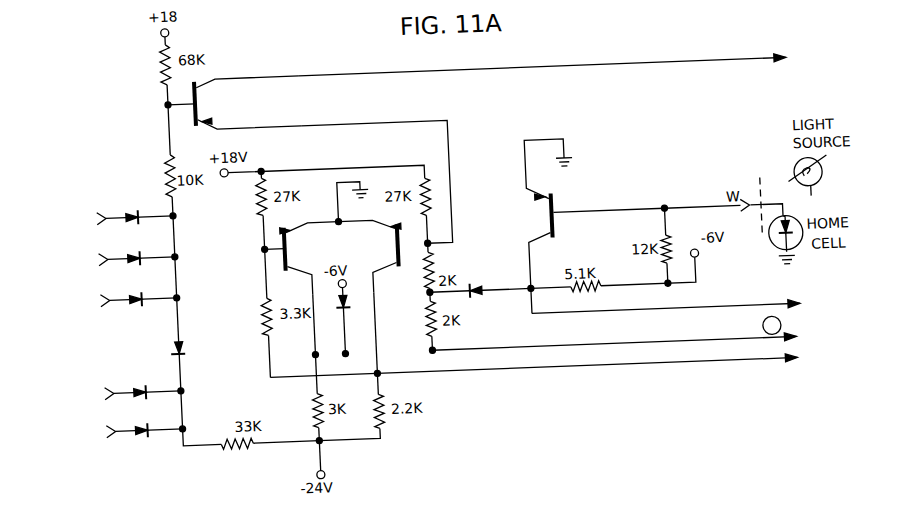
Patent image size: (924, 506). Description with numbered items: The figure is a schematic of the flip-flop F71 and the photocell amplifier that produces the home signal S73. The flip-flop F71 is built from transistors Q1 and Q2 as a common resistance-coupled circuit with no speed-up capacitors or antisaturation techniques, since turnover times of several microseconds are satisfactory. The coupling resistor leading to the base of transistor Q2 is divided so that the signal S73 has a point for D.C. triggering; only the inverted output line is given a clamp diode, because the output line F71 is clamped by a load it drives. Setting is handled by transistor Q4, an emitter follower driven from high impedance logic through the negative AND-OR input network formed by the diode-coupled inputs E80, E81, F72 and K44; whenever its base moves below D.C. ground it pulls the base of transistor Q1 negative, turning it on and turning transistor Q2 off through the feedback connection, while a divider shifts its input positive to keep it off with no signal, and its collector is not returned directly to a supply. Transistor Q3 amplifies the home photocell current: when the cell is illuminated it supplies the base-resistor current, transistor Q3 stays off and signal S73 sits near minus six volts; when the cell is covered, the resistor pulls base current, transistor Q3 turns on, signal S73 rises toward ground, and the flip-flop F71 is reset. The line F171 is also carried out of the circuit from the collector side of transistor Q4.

The transistor Q1 is at (303, 259).
The transistor Q2 is at (371, 256).
The transistor Q3 is at (590, 224).
The transistor Q4 is at (234, 103).
The signal F171 is at (562, 66).
The flip-flop F71 is at (551, 349).
The home signal S73 is at (441, 364).
The input signal E80 is at (109, 213).
The input signal E81 is at (111, 254).
The input signal F72 is at (113, 295).
The input signal K44 is at (117, 388).